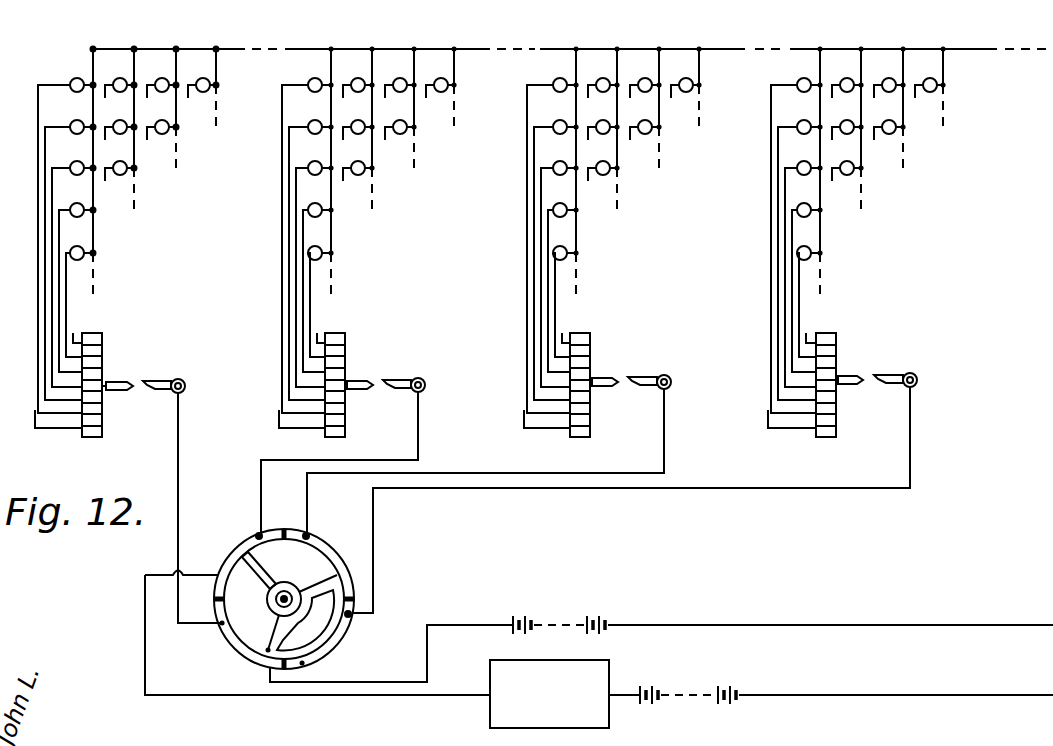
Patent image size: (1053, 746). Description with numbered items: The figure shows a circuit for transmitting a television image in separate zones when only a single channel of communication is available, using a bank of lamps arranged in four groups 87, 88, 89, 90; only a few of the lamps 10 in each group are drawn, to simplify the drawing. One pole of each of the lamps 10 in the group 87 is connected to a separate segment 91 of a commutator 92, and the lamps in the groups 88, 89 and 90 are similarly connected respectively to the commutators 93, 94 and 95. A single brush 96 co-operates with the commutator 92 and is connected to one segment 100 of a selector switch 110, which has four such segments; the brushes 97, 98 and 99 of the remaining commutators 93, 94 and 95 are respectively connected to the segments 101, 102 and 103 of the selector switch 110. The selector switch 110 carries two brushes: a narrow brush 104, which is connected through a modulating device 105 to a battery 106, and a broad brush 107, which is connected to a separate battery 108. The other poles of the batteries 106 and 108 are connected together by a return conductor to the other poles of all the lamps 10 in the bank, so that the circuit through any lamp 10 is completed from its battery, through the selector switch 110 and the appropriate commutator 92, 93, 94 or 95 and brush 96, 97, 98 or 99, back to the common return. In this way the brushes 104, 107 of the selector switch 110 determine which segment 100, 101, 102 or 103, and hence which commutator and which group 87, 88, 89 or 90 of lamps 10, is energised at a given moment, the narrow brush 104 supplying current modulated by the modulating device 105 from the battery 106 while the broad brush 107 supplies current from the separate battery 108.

The lamp 10 is at (72, 80).
The group of lamps 87 is at (144, 174).
The group of lamps 88 is at (382, 174).
The group of lamps 89 is at (632, 174).
The group of lamps 90 is at (878, 174).
The segment 91 is at (92, 438).
The commutator 92 is at (73, 261).
The commutator 93 is at (314, 261).
The commutator 94 is at (558, 261).
The commutator 95 is at (802, 261).
The brush 96 is at (159, 391).
The brush 97 is at (396, 390).
The brush 98 is at (641, 387).
The brush 99 is at (885, 386).
The segment 100 is at (230, 636).
The segment 101 is at (256, 534).
The segment 102 is at (310, 537).
The segment 103 is at (313, 660).
The narrow brush 104 is at (263, 575).
The modulating device 105 is at (527, 678).
The battery 106 is at (683, 700).
The broad brush 107 is at (340, 596).
The battery 108 is at (548, 622).
The selector switch 110 is at (284, 599).